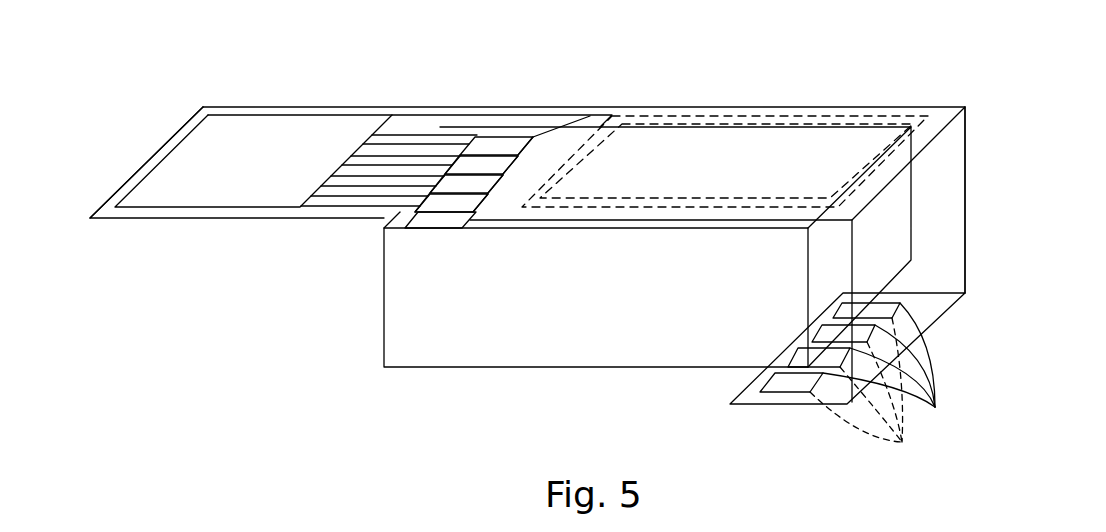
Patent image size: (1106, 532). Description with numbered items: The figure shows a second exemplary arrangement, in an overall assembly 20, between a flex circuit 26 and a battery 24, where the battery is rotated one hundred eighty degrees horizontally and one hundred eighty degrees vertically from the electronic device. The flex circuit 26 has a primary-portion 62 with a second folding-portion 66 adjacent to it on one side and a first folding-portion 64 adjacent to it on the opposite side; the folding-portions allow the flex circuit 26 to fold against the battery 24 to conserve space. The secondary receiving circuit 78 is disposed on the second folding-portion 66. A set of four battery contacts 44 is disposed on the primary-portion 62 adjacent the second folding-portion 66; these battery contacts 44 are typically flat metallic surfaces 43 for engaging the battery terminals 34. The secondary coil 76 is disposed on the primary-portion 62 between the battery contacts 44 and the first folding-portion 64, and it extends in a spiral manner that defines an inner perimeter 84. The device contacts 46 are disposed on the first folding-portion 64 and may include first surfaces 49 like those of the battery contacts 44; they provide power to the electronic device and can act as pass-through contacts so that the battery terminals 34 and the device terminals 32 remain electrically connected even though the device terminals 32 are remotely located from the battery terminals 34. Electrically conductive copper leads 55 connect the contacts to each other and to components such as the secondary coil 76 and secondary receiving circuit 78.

The sensor assembly 20 is at (970, 80).
The battery 24 is at (443, 368).
The flex circuit 26 is at (663, 107).
The device terminals 32 is at (862, 395).
The battery terminals 34 is at (492, 200).
The flat metallic surfaces 43 is at (457, 170).
The battery contacts 44 is at (455, 202).
The device contacts 46 is at (889, 370).
The first surfaces of the device contacts 49 is at (784, 385).
The electrically conductive copper leads 55 is at (387, 133).
The primary-portion 62 is at (763, 127).
The first folding-portion 64 is at (958, 202).
The second folding-portion 66 is at (260, 218).
The secondary coil 76 is at (827, 126).
The secondary receiving circuit 78 is at (260, 127).
The inner perimeter 84 is at (762, 176).